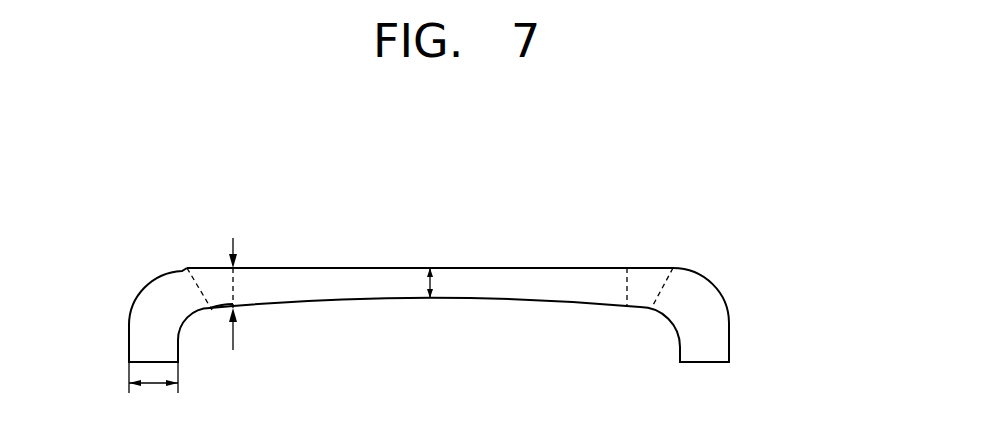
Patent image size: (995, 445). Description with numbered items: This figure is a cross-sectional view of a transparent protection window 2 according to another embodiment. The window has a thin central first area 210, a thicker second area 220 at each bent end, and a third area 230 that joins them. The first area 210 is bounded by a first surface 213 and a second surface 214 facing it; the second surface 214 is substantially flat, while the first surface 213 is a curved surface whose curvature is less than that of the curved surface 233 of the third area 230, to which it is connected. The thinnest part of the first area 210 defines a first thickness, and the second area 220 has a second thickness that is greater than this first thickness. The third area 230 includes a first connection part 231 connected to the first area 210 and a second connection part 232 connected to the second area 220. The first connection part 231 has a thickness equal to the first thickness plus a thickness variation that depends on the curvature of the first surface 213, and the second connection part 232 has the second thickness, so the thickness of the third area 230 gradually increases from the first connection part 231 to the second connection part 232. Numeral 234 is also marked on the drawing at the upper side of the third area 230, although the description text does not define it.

The transparent protection window 2 is at (738, 172).
The first area 210 is at (335, 280).
The first surface 213 is at (567, 304).
The second surface 214 is at (562, 268).
The second area 220 is at (140, 343).
The third area 230 is at (212, 286).
The first connection part 231 is at (236, 285).
The second connection part 232 is at (193, 286).
The curved surface 233 is at (218, 311).
The upper surface of transition region 234 is at (198, 268).